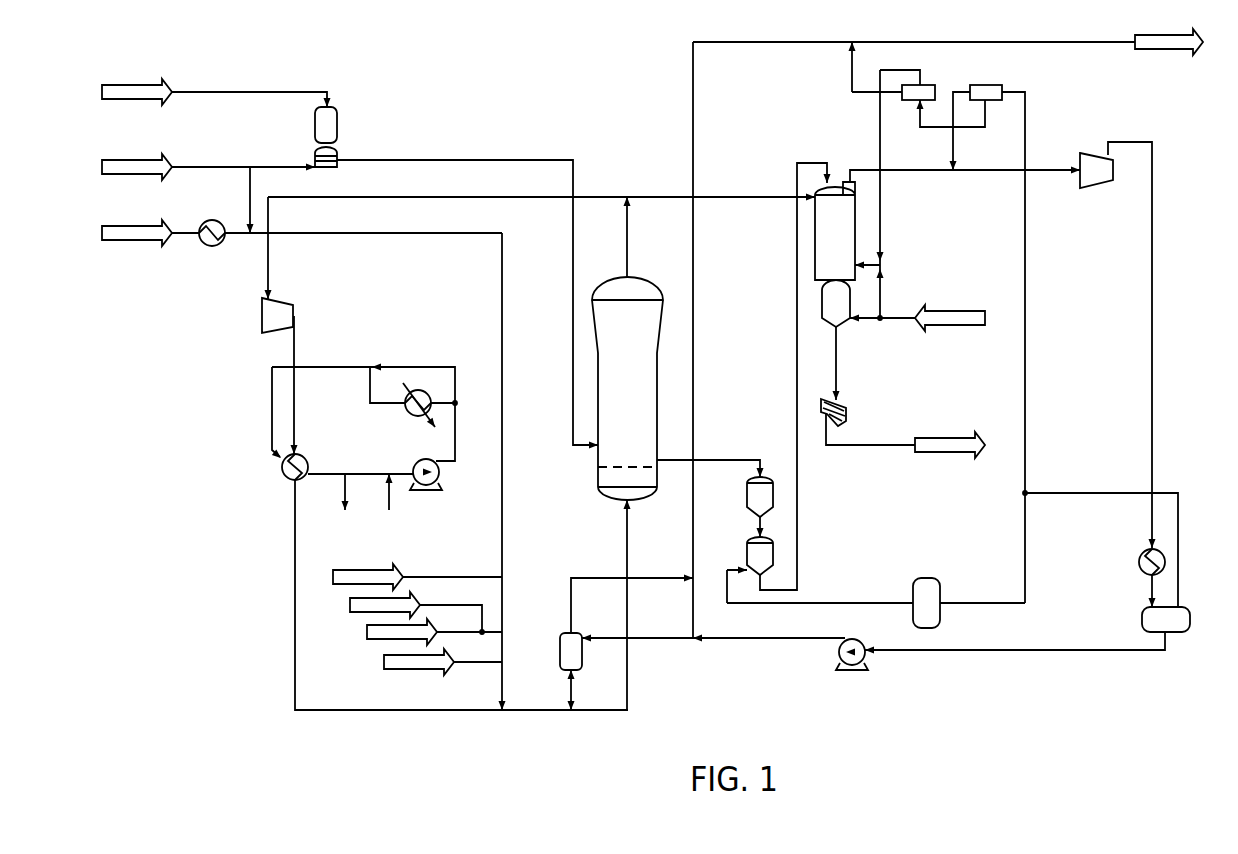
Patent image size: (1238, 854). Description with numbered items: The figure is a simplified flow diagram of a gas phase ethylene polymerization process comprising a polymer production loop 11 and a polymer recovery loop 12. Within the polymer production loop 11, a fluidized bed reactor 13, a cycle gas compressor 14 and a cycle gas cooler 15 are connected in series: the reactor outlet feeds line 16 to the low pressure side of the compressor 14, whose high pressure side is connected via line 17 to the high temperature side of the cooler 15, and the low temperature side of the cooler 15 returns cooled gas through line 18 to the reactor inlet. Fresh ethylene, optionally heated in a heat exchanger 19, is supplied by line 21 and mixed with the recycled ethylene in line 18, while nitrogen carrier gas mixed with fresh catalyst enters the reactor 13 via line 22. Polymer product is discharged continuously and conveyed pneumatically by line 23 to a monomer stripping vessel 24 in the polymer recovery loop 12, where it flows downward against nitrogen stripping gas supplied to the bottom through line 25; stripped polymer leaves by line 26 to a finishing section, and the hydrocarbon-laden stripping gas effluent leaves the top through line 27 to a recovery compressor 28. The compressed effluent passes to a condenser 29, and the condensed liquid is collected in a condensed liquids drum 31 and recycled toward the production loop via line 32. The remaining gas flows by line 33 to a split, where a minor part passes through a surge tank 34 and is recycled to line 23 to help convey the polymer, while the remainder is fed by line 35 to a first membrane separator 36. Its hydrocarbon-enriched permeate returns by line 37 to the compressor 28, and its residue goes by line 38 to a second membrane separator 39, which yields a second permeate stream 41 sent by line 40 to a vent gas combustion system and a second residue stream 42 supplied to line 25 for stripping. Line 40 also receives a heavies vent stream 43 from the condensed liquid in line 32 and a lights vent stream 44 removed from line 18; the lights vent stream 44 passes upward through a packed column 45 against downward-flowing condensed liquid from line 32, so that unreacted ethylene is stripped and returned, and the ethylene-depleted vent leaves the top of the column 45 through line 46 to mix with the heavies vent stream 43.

The polymer production loop 11 is at (603, 180).
The polymer recovery loop 12 is at (1150, 298).
The fluidized bed reactor 13 is at (613, 418).
The cycle gas compressor 14 is at (300, 316).
The cycle gas cooler 15 is at (283, 474).
The line 16 is at (500, 197).
The line 17 is at (296, 422).
The line 18 is at (480, 712).
The heat exchanger 19 is at (206, 246).
The line 21 is at (503, 505).
The line 22 is at (503, 160).
The line 23 is at (718, 458).
The monomer stripping vessel 24 is at (822, 250).
The line 25 is at (895, 322).
The line 26 is at (838, 378).
The line 27 is at (902, 171).
The recovery compressor 28 is at (1092, 152).
The condenser 29 is at (1139, 562).
The condensed liquids drum 31 is at (1141, 617).
The line 32 is at (1003, 652).
The line 33 is at (1060, 493).
The surge tank 34 is at (913, 592).
The line 35 is at (1027, 383).
The first membrane separator 36 is at (995, 84).
The line 37 is at (955, 147).
The line 38 is at (932, 127).
The second membrane separator 39 is at (927, 84).
The line 40 is at (827, 42).
The second permeate stream 41 is at (848, 77).
The second residue stream 42 is at (882, 235).
The heavies vent stream 43 is at (692, 618).
The lights vent stream 44 is at (571, 690).
The packed column 45 is at (559, 645).
The line 46 is at (600, 578).